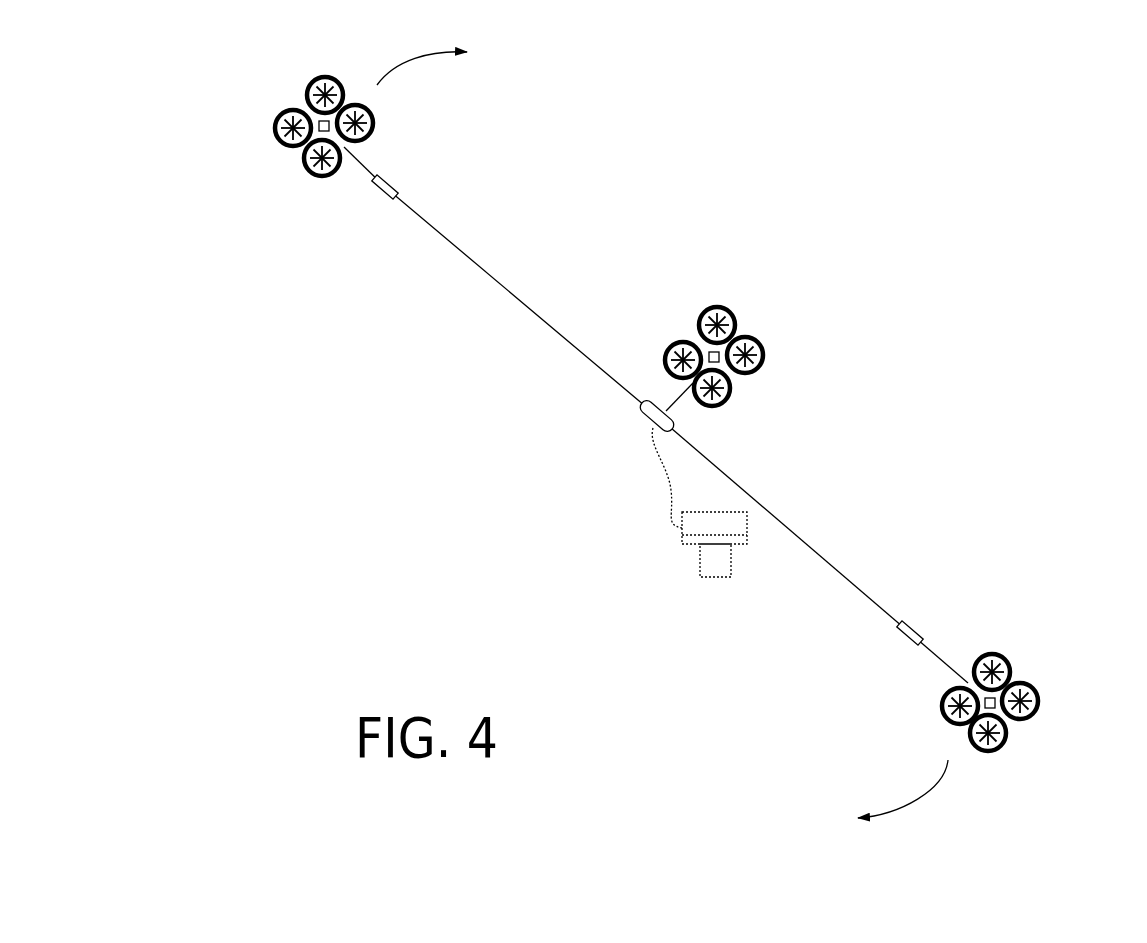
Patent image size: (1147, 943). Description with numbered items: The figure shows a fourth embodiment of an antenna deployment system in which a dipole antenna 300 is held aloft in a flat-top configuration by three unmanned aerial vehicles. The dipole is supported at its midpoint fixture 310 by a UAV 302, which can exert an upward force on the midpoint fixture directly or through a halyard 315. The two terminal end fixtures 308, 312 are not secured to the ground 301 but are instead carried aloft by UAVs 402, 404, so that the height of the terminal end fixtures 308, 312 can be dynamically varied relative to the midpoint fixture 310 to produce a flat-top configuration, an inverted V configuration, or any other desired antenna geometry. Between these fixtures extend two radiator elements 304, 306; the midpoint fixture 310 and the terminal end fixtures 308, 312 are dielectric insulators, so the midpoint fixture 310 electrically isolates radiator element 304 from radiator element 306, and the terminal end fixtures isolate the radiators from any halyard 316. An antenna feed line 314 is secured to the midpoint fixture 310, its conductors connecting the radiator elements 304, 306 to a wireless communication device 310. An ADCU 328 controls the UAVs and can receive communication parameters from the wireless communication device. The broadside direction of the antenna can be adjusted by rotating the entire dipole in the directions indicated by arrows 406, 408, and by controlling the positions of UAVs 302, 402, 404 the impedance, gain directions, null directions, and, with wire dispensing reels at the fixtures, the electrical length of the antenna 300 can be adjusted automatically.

The dipole antenna 300 is at (437, 357).
The ground 301 is at (454, 496).
The UAV 302 is at (682, 315).
The radiator element 304 is at (500, 280).
The radiator element 306 is at (782, 522).
The terminal end fixture 308 is at (393, 180).
The midpoint fixture 310 is at (633, 410).
The terminal end fixture 312 is at (920, 633).
The antenna feed line 314 is at (353, 163).
The halyard 315 is at (670, 398).
The halyard 316 is at (948, 663).
The ADCU 328 is at (713, 577).
The UAV 402 is at (263, 165).
The UAV 404 is at (1053, 707).
The arrow 406 is at (422, 55).
The arrow 408 is at (908, 789).